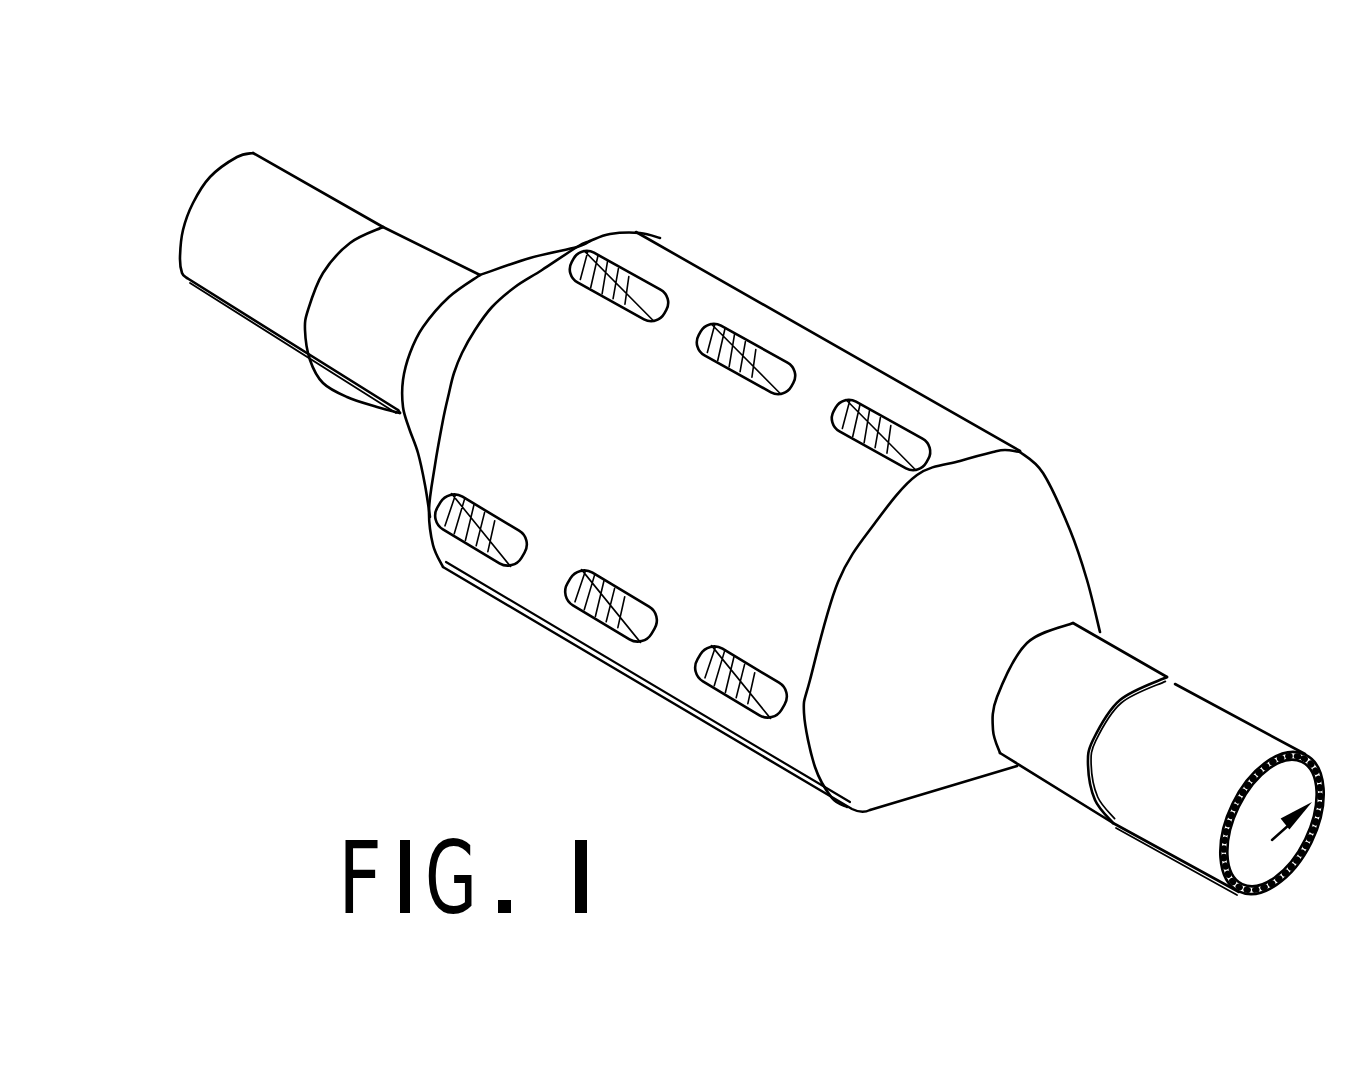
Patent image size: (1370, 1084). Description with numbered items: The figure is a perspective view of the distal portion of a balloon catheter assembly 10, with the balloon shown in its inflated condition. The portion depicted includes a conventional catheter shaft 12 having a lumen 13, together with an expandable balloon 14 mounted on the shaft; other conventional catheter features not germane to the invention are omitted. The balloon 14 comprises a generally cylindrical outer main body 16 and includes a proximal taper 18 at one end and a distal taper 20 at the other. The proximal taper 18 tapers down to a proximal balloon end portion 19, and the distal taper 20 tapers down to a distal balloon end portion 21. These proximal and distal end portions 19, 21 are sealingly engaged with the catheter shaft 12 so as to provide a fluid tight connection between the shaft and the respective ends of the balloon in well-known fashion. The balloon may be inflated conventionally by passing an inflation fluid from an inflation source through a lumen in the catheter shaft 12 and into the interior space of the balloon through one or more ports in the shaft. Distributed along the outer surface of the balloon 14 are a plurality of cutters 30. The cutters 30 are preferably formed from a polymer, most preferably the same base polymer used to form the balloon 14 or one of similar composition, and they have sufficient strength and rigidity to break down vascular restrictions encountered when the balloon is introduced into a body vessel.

The balloon catheter assembly 10 is at (735, 228).
The catheter shaft 12 is at (250, 312).
The lumen 13 is at (1320, 793).
The expandable balloon 14 is at (530, 682).
The outer main body 16 is at (923, 418).
The proximal taper 18 is at (425, 377).
The proximal balloon end portion 19 is at (330, 377).
The distal taper 20 is at (933, 760).
The distal balloon end portion 21 is at (1110, 663).
The cutters 30 is at (853, 365).